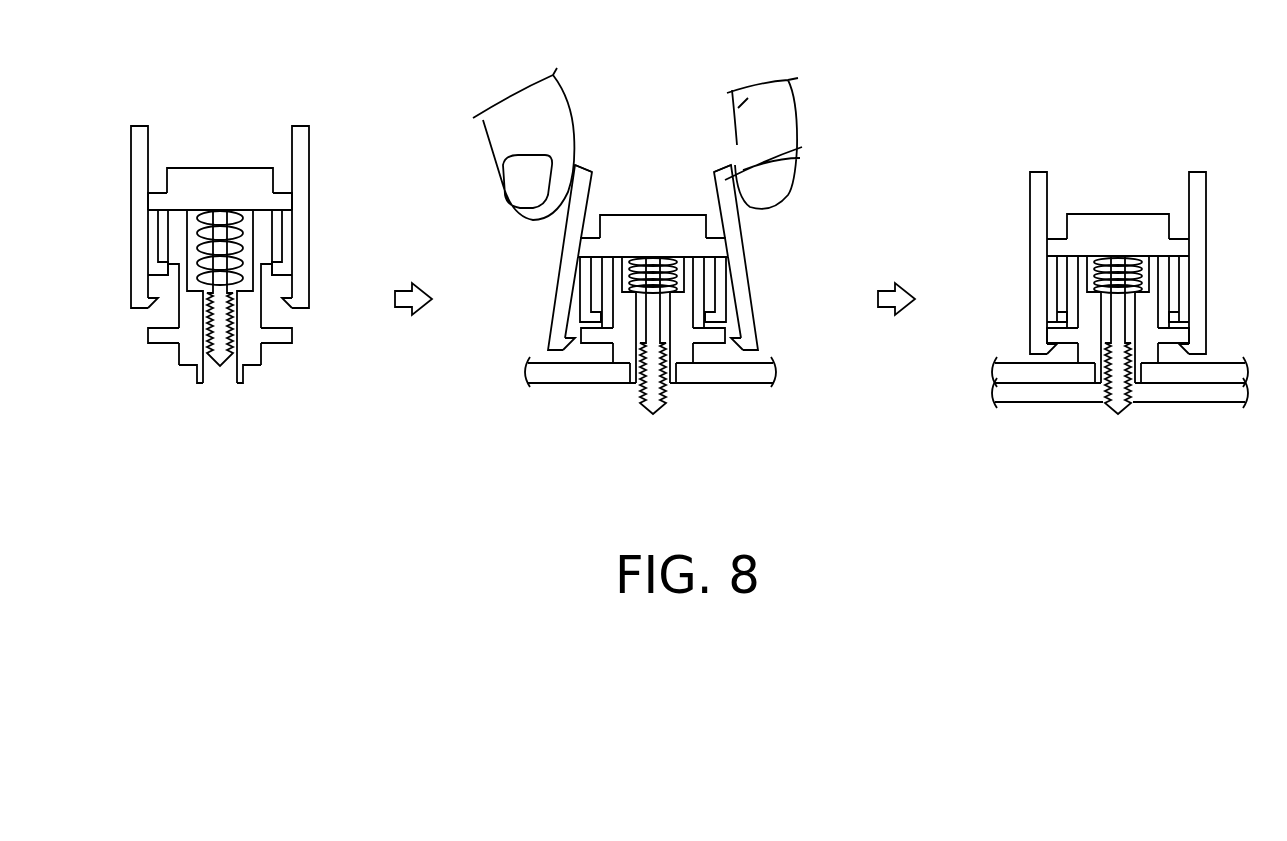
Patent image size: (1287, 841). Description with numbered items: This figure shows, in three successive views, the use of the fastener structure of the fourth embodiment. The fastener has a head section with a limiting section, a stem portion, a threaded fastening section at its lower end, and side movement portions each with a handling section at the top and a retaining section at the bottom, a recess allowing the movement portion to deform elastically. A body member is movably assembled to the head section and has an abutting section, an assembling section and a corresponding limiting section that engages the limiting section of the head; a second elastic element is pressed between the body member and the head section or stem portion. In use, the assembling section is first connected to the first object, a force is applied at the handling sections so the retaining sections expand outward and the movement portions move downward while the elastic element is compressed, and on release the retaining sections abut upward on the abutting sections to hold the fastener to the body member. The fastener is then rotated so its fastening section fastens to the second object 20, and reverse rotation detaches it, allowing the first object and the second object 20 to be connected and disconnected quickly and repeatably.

The second object 20 is at (1013, 390).